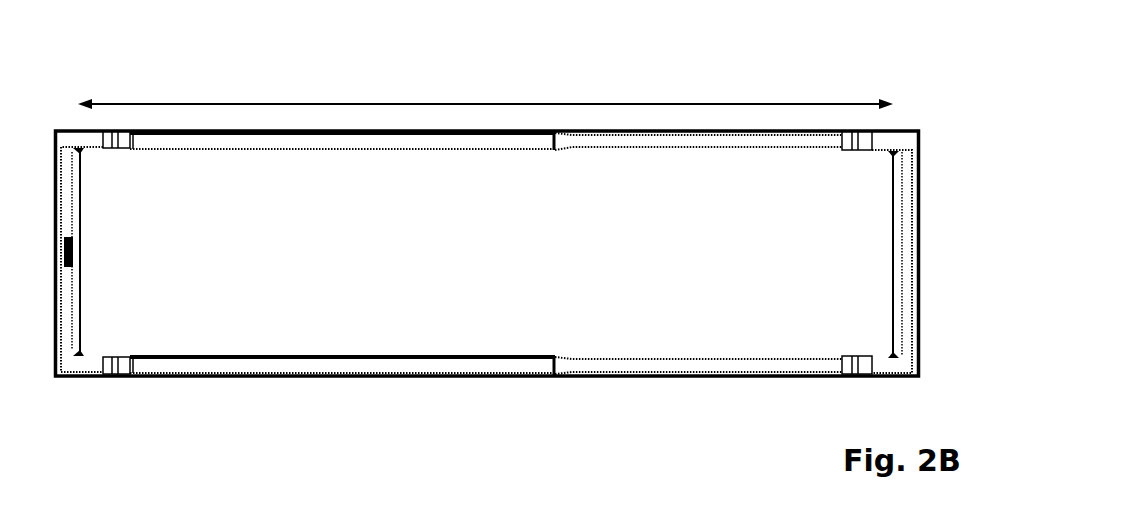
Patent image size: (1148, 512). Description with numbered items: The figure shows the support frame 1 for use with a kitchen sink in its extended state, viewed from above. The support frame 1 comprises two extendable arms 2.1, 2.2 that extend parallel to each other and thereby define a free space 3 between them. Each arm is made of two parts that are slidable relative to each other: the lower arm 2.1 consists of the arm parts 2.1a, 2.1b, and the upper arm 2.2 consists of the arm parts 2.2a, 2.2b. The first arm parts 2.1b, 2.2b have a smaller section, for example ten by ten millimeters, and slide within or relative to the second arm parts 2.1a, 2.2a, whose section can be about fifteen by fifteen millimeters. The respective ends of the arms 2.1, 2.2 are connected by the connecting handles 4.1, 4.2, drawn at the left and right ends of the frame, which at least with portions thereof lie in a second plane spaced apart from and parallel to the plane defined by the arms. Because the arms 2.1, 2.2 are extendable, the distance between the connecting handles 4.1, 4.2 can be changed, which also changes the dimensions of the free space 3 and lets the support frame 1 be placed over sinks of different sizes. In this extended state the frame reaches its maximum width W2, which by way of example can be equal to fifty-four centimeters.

The support frame 1 is at (749, 61).
The extendable arm 2.1 is at (528, 322).
The second arm part 2.1a is at (346, 356).
The first arm part 2.1b is at (711, 360).
The extendable arm 2.2 is at (509, 170).
The second arm part 2.2a is at (266, 150).
The first arm part 2.2b is at (686, 149).
The free space 3 is at (795, 319).
The connecting handle 4.1 is at (82, 236).
The connecting handle 4.2 is at (898, 238).
The maximum width W2 is at (485, 94).